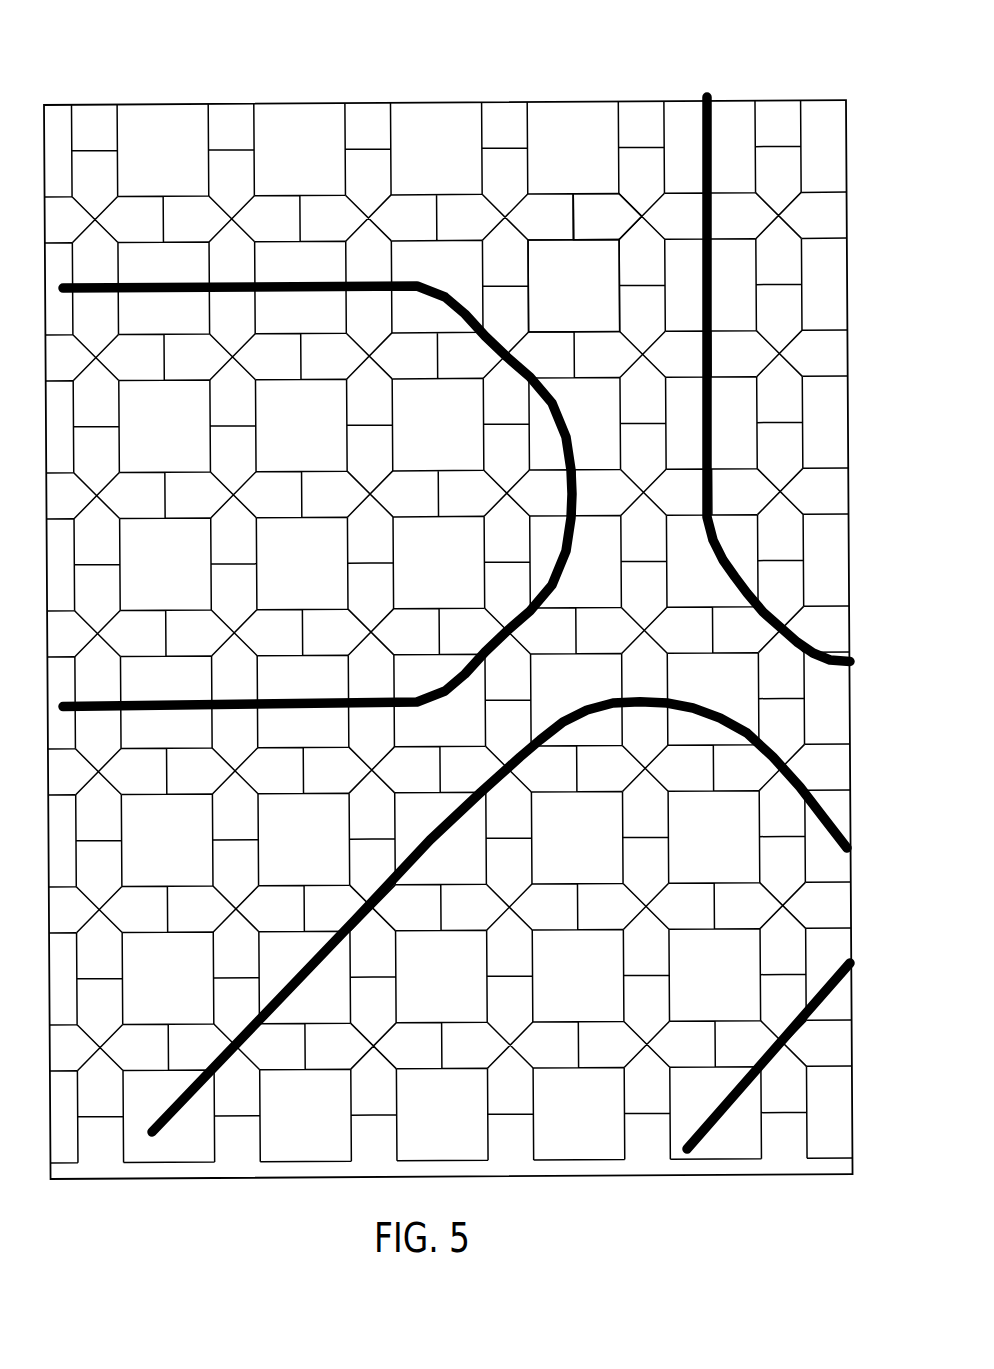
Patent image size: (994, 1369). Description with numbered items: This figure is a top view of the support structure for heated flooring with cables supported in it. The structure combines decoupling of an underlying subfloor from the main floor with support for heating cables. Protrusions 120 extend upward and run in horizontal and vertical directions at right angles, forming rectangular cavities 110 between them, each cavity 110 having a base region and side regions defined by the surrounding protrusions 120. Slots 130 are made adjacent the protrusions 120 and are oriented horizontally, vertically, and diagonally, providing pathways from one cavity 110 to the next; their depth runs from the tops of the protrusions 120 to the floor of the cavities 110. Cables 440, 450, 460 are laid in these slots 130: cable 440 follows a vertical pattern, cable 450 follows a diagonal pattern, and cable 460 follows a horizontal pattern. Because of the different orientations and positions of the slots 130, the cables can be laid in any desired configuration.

The cavity 110 is at (585, 294).
The protrusion 120 is at (615, 225).
The slot 130 is at (573, 212).
The cable 440 is at (711, 118).
The cable 450 is at (698, 1142).
The cable 460 is at (105, 700).